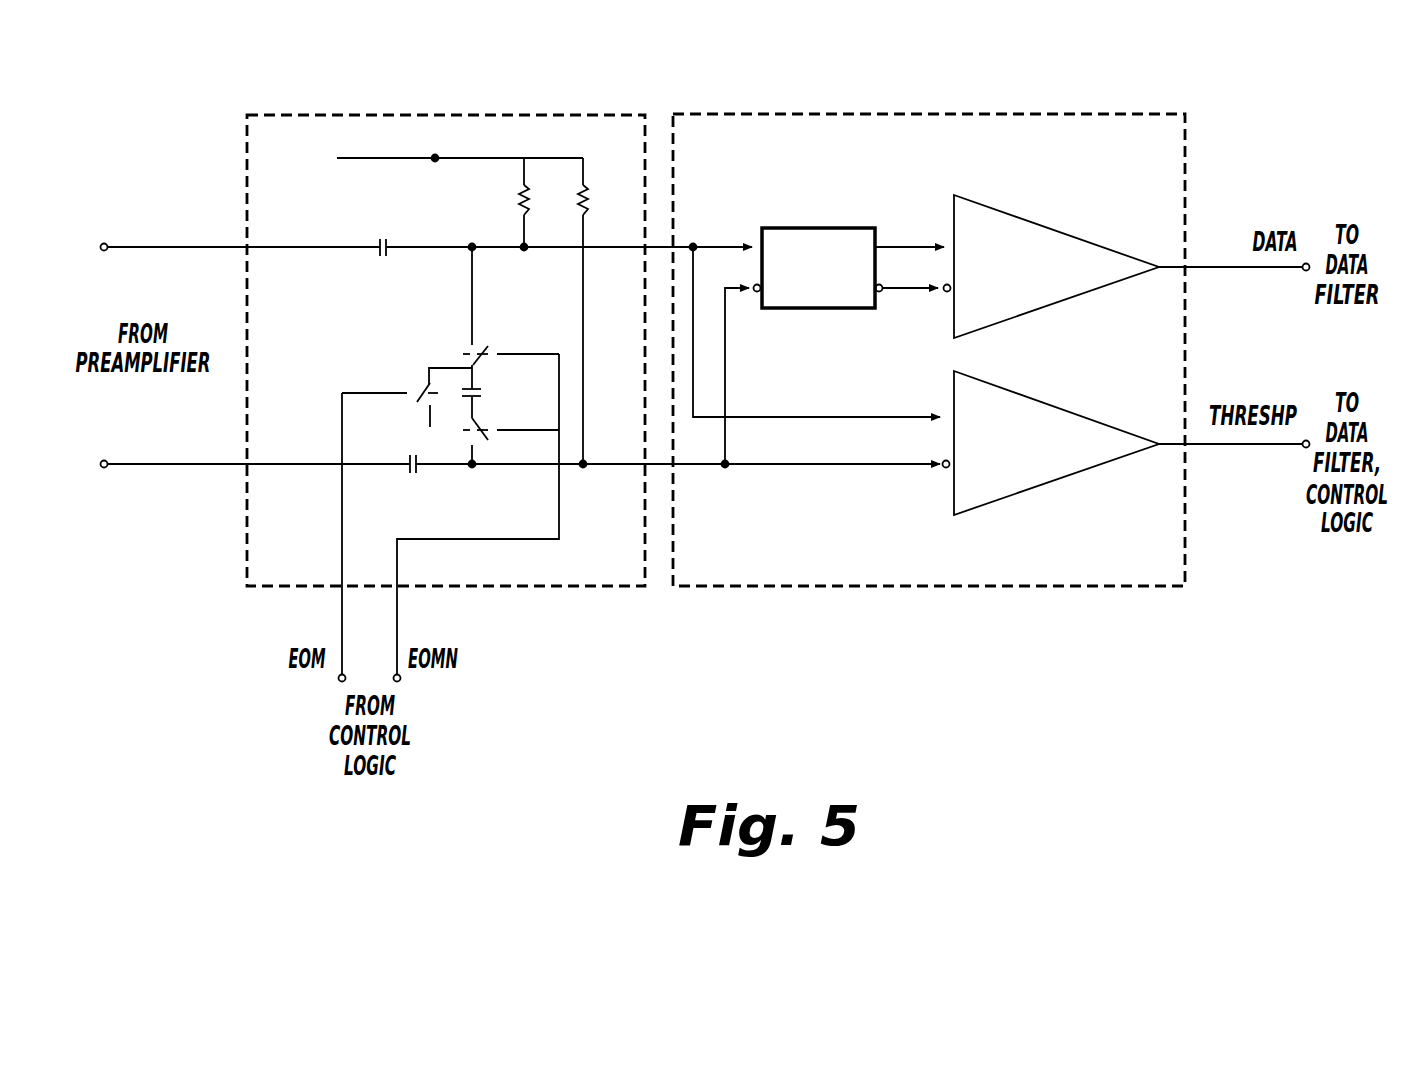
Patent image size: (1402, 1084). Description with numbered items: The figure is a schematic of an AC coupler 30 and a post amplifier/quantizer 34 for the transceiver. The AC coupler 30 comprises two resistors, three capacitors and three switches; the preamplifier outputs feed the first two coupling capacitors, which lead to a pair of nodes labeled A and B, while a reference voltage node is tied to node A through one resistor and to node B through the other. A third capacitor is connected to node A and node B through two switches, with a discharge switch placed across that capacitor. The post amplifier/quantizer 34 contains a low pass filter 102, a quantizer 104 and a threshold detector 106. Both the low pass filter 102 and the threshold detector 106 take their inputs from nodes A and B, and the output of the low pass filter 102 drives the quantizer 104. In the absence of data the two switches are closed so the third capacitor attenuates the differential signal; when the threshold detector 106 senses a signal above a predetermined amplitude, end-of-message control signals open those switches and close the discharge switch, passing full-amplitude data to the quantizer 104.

The AC coupler 30 is at (295, 113).
The post amplifier/quantizer 34 is at (929, 329).
The low pass filter 102 is at (830, 309).
The quantizer 104 is at (1040, 227).
The threshold detector 106 is at (1042, 403).